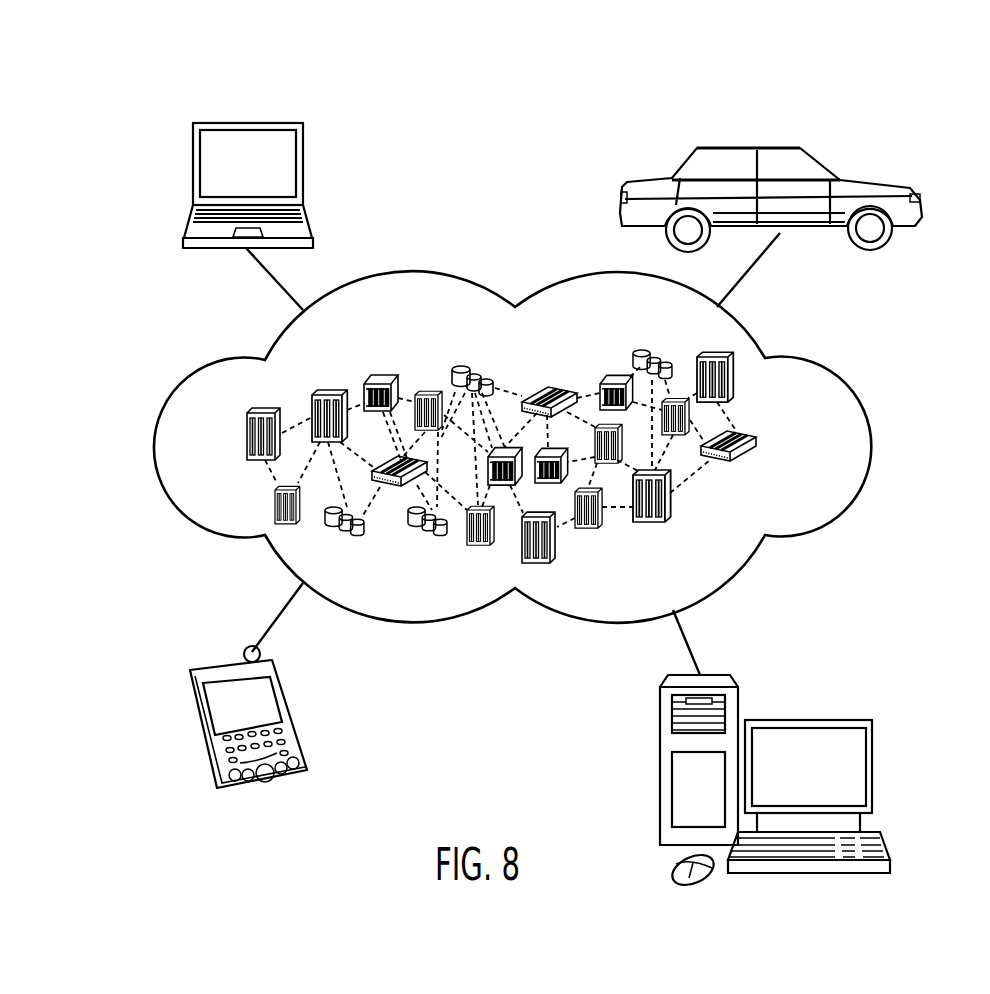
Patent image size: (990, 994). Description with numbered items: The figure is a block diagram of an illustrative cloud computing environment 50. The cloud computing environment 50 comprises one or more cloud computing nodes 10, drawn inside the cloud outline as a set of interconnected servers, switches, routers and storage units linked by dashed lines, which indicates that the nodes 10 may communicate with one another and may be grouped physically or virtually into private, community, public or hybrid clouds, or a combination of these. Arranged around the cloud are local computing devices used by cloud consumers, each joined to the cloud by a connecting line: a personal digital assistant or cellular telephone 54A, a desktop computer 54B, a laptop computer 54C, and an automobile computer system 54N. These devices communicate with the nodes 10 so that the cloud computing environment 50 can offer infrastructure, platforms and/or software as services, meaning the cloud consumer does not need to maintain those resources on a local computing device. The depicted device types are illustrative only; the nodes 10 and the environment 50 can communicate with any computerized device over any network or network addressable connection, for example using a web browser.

The cloud computing node 10 is at (770, 449).
The cloud computing environment 50 is at (821, 363).
The personal digital assistant or cellular telephone 54A is at (230, 662).
The desktop computer 54B is at (808, 718).
The laptop computer 54C is at (248, 122).
The automobile computer system 54N is at (752, 148).